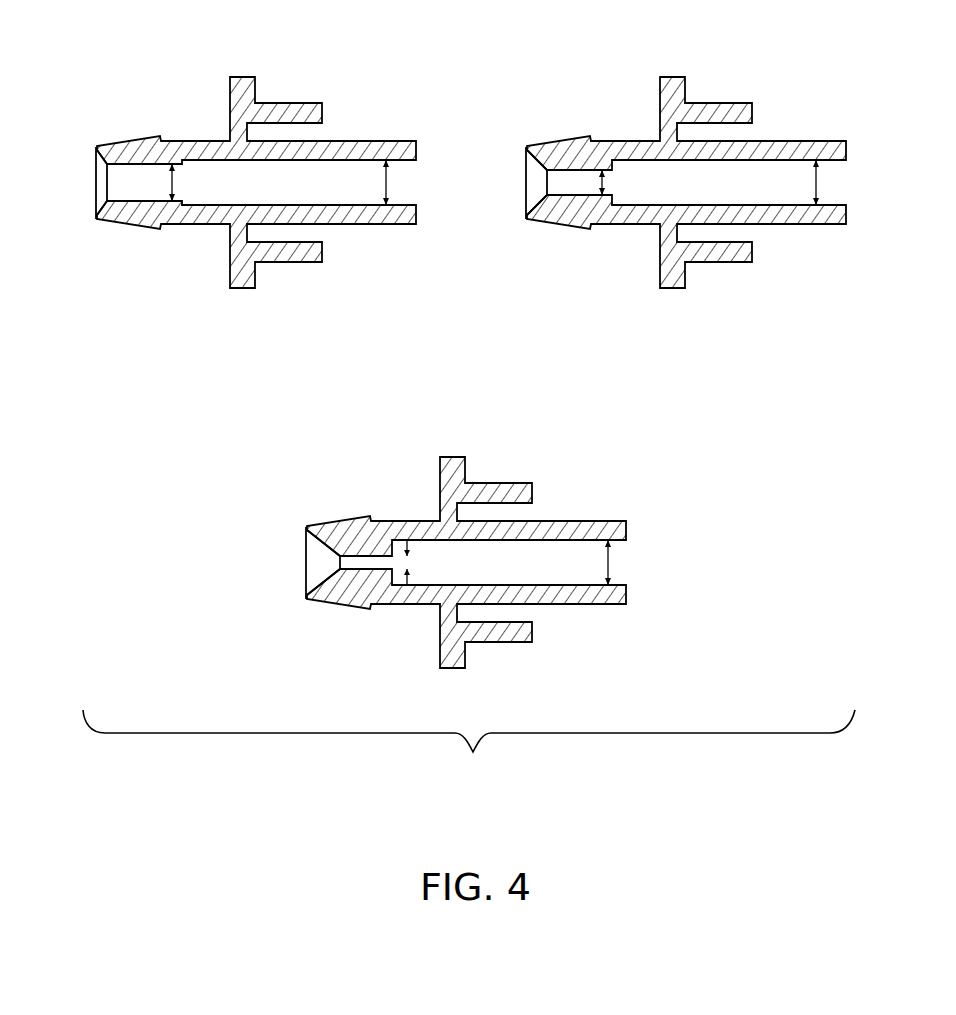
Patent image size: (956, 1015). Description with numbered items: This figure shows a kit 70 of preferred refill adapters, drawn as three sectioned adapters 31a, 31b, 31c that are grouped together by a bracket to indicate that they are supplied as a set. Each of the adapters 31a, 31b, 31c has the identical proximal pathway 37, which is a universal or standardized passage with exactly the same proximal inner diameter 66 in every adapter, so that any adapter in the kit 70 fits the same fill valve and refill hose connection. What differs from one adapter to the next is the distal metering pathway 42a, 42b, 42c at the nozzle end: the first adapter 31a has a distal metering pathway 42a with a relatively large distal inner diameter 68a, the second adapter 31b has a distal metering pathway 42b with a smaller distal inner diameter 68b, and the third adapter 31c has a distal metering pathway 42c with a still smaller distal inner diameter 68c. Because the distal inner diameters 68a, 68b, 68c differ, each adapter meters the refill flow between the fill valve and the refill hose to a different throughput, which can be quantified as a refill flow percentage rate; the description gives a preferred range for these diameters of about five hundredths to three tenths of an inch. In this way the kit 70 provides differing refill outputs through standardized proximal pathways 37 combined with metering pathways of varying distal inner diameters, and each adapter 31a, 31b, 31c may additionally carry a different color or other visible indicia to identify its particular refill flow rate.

The adapter 31a is at (313, 50).
The adapter 31b is at (686, 110).
The adapter 31c is at (466, 489).
The proximal pathway 37 is at (282, 207).
The distal metering pathway 42a is at (138, 206).
The distal metering pathway 42b is at (568, 212).
The distal metering pathway 42c is at (353, 592).
The proximal inner diameter 66 is at (387, 183).
The distal inner diameter 68a is at (173, 183).
The distal inner diameter 68b is at (646, 182).
The distal inner diameter 68c is at (450, 562).
The kit 70 is at (469, 750).